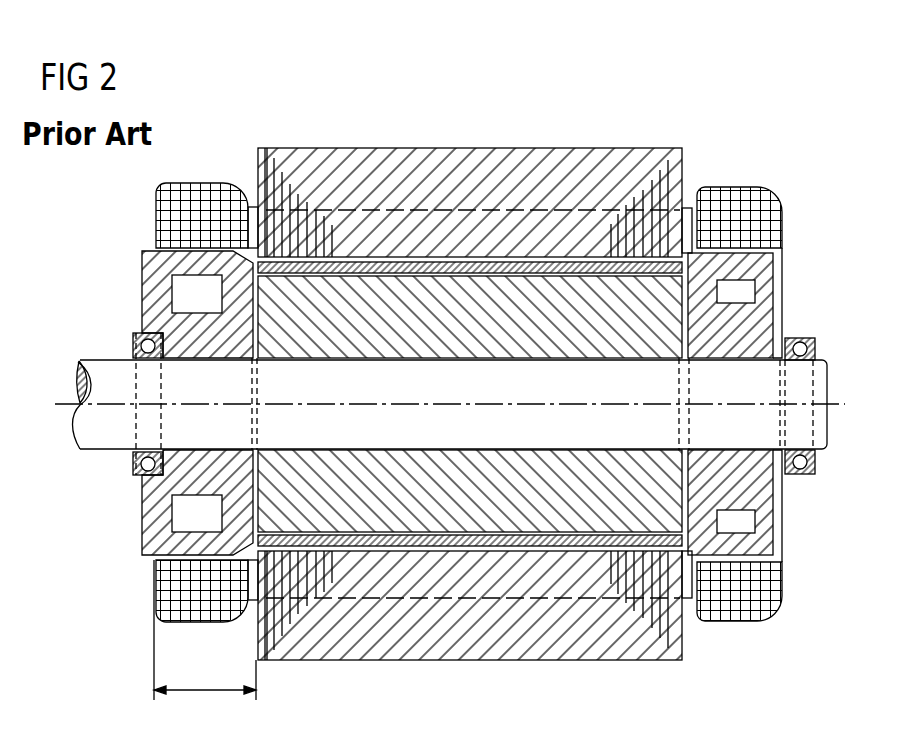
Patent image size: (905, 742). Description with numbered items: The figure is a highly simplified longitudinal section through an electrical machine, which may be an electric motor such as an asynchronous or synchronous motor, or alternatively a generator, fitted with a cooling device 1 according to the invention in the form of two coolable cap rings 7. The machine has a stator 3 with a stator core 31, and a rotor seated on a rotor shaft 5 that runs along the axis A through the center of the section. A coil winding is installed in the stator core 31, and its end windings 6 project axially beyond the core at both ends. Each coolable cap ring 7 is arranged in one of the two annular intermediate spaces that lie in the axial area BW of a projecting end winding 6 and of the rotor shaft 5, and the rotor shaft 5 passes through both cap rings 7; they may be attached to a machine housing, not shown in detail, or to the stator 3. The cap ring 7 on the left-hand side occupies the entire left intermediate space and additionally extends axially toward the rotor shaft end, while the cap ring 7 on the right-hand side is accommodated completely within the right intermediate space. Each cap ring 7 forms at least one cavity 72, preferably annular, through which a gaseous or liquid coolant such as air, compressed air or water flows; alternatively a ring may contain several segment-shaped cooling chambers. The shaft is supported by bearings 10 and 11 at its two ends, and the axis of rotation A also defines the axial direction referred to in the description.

The cooling device 1 is at (461, 403).
The coolable cap ring 7 is at (147, 308).
The stator 3 is at (470, 403).
The stator core 31 is at (445, 225).
The rotor shaft 5 is at (812, 388).
The end winding 6 is at (172, 214).
The bearing 10 is at (132, 461).
The bearing 11 is at (815, 462).
The cavity 72 is at (182, 298).
The axis of rotation A is at (440, 407).
The axial area BW is at (205, 630).